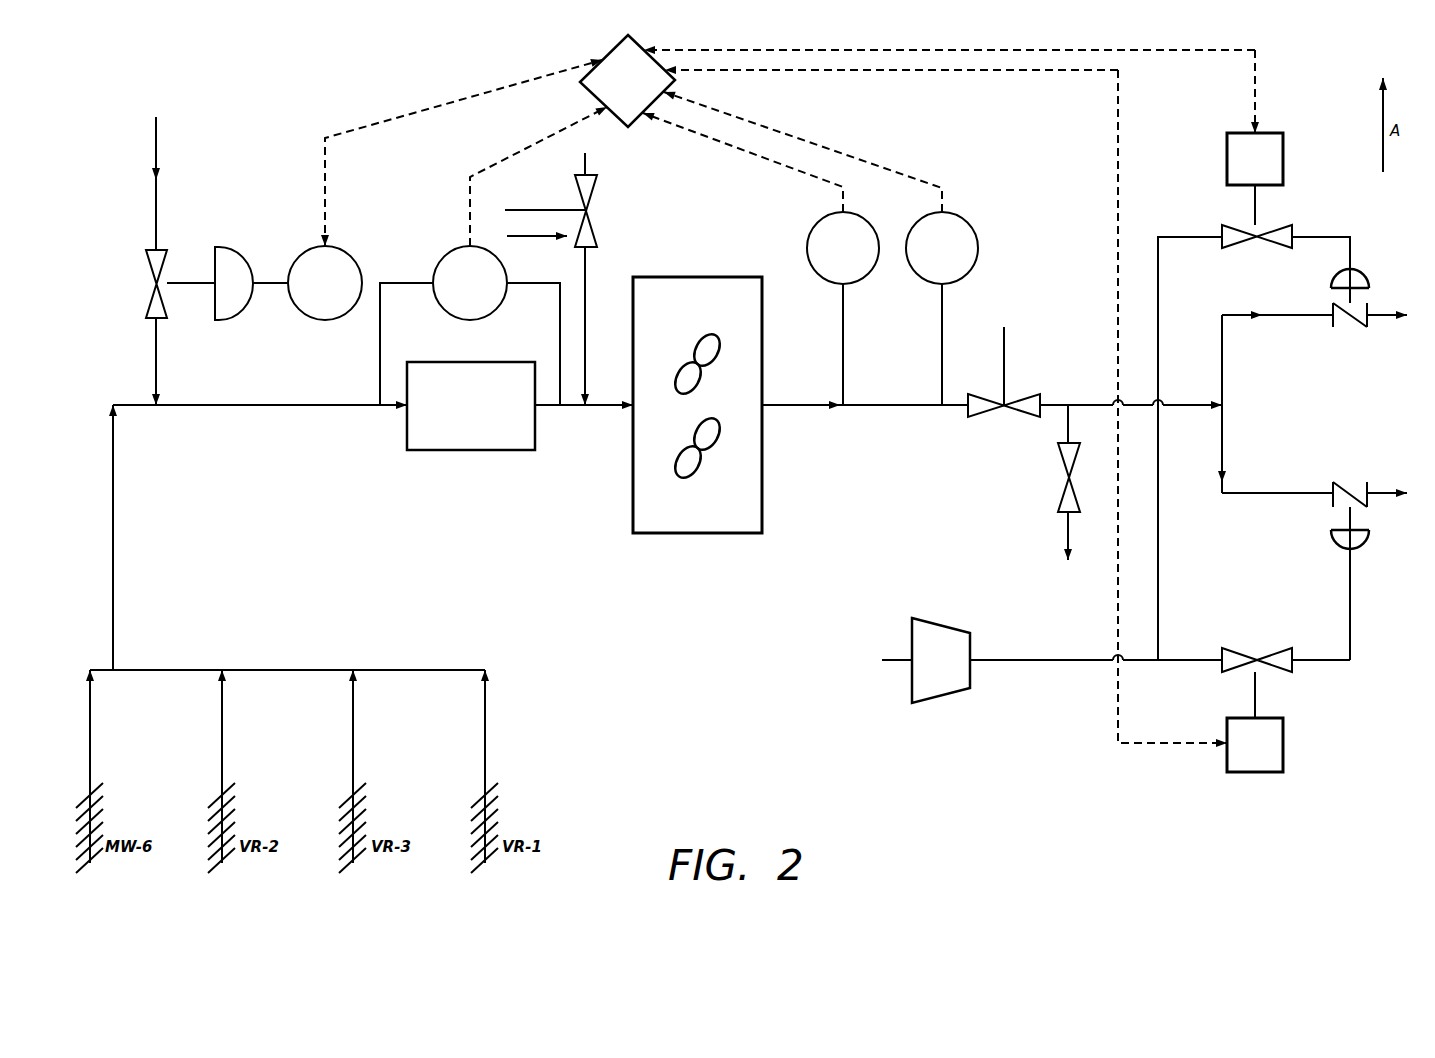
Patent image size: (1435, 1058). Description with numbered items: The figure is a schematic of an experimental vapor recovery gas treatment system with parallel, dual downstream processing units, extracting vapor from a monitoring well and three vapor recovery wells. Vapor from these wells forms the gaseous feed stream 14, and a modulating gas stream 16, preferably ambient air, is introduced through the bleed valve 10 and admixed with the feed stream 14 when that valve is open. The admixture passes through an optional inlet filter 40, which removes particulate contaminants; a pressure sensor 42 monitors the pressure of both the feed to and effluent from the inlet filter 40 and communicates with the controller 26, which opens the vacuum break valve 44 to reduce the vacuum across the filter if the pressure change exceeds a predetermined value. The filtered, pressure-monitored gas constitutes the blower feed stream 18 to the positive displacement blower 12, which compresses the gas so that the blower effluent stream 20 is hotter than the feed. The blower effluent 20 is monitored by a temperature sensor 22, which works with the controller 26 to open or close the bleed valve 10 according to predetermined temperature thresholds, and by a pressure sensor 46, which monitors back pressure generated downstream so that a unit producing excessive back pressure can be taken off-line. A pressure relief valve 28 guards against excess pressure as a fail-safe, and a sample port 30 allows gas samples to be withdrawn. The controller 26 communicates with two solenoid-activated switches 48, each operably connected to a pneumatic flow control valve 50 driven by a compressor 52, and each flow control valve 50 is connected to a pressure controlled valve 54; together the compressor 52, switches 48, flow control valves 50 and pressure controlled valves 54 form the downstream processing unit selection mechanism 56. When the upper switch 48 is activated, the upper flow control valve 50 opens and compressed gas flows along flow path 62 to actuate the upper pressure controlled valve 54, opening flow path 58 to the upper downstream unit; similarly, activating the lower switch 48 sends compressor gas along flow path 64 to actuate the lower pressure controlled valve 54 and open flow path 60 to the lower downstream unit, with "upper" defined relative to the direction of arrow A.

The bleed valve 10 is at (158, 252).
The positive displacement blower 12 is at (713, 277).
The gaseous feed stream 14 is at (135, 403).
The modulating gas stream 16 is at (158, 368).
The blower feed stream 18 is at (610, 407).
The blower effluent stream 20 is at (788, 405).
The temperature sensor 22 is at (960, 223).
The controller 26 is at (618, 92).
The pressure relief valve 28 is at (1022, 418).
The sample port 30 is at (1074, 462).
The inlet filter 40 is at (472, 452).
The pressure sensor 42 is at (441, 264).
The vacuum break valve 44 is at (593, 190).
The pressure sensor 46 is at (878, 272).
The switch 48 is at (1227, 148).
The flow control valve 50 is at (1248, 249).
The compressor 52 is at (943, 703).
The pressure controlled valve 54 is at (1333, 283).
The downstream processing unit selection mechanism 56 is at (1085, 680).
The flow path 58 is at (1222, 330).
The flow path 60 is at (1222, 452).
The flow path 62 is at (1345, 237).
The flow path 64 is at (1343, 662).